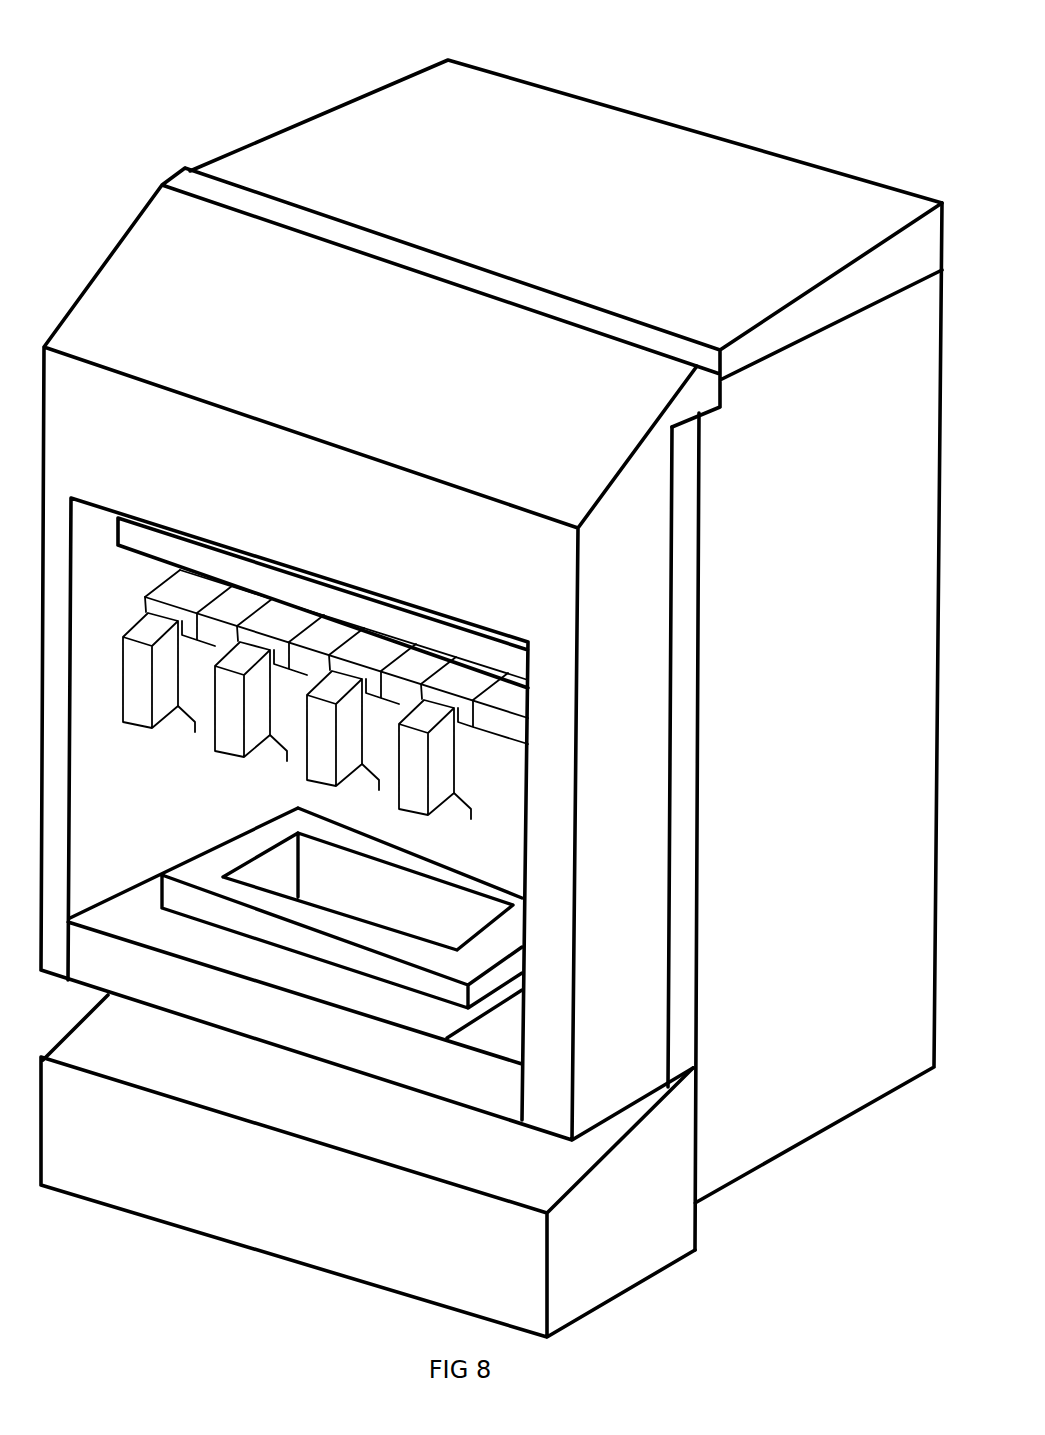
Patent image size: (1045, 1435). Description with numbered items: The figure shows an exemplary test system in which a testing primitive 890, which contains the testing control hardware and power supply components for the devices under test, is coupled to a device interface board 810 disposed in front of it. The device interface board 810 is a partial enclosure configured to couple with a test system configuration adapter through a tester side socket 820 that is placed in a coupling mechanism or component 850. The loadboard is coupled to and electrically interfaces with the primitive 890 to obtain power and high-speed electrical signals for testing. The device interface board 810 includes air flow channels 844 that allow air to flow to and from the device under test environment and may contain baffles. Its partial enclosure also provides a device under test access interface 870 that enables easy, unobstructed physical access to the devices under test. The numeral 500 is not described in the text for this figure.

The cooking appliance 500 is at (491, 670).
The device interface board 810 is at (590, 1012).
The tester side socket 820 is at (117, 694).
The air flow channels 844 is at (661, 760).
The coupling mechanism 850 is at (195, 731).
The device under test access interface 870 is at (462, 846).
The testing primitive 890 is at (800, 702).